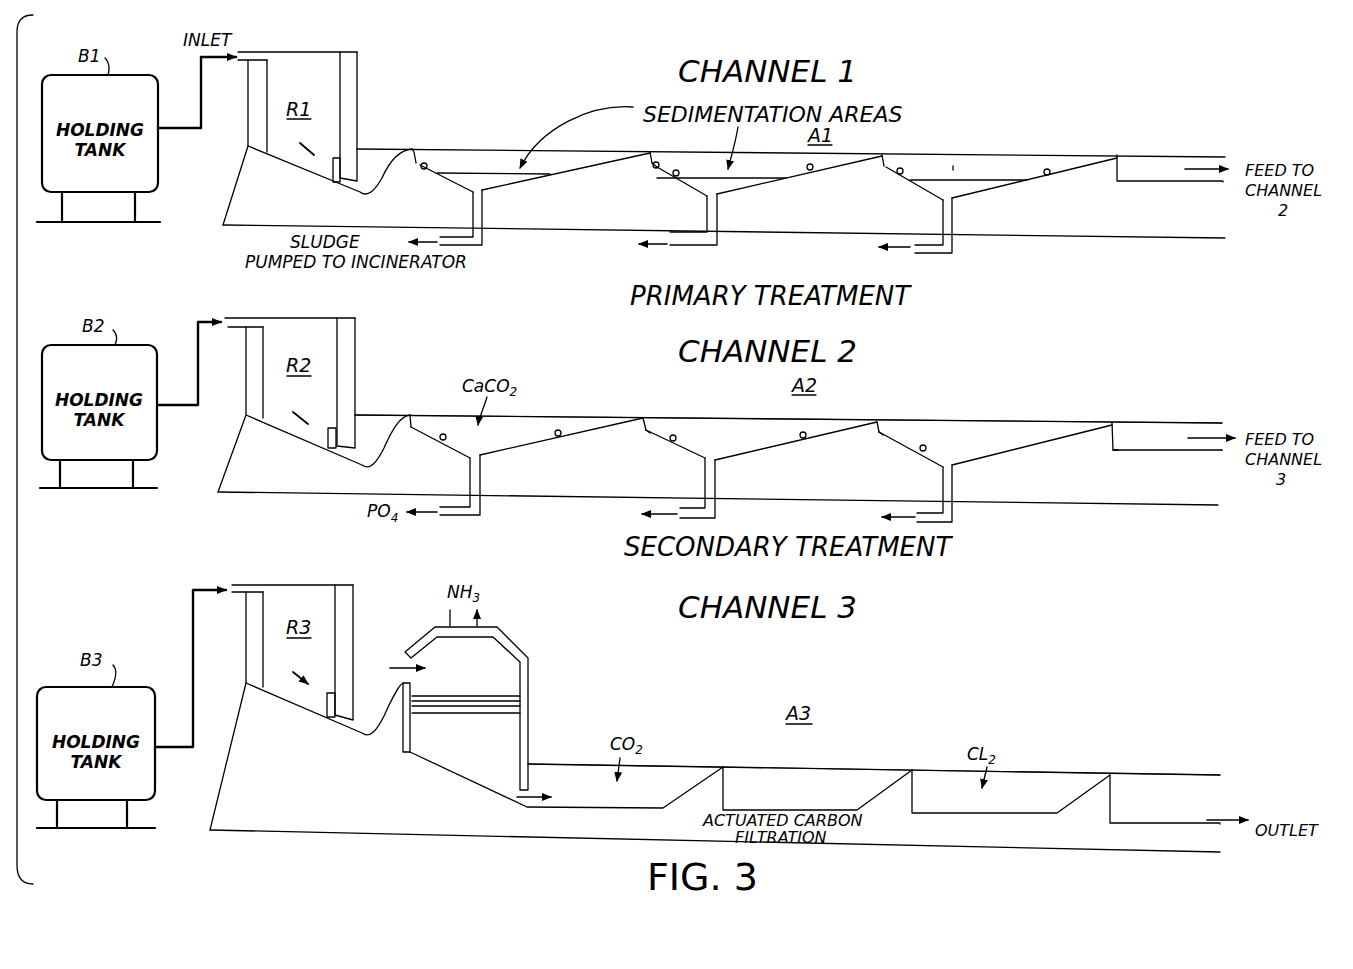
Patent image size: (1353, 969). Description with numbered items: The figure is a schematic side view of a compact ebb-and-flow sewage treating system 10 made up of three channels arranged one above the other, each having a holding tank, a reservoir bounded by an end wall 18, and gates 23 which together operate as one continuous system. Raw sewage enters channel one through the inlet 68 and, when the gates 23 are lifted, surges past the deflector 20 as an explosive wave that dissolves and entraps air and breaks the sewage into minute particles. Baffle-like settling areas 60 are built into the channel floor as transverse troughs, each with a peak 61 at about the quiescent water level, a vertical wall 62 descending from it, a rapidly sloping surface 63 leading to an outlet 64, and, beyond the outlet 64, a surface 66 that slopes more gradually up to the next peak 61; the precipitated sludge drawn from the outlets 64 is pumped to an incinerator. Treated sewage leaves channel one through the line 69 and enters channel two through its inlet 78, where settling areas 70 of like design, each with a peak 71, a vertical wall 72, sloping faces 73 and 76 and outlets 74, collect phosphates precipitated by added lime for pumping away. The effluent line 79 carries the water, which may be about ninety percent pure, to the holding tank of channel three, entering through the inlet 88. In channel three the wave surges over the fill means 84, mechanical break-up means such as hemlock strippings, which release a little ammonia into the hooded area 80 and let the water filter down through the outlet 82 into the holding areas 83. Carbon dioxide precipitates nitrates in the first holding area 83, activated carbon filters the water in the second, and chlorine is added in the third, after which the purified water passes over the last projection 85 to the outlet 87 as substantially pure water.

The waste treatment apparatus 10 is at (724, 245).
The channel end wall 18 is at (358, 77).
The deflector 20 is at (417, 149).
The gates 23 is at (328, 162).
The settling areas 60 is at (448, 150).
The peak 61 is at (651, 153).
The vertical wall 62 is at (652, 166).
The rapidly sloping surface 63 is at (423, 168).
The outlet 64 is at (482, 217).
The surface 66 is at (567, 170).
The inlet 68 is at (258, 56).
The line 69 is at (1220, 142).
The settling areas 70 is at (542, 425).
The peak 71 is at (645, 416).
The vertical wall 72 is at (650, 423).
The sloping face 73 is at (442, 439).
The outlets 74 is at (480, 478).
The sloping face 76 is at (559, 436).
The inlet of channel 2 78 is at (247, 320).
The effluent line 79 is at (1208, 435).
The hooded area 80 is at (524, 636).
The outlet 82 is at (520, 805).
The holding areas 83 is at (560, 773).
The fill means 84 is at (452, 698).
The projection 85 is at (723, 767).
The outlet 87 is at (1223, 817).
The inlet of channel 3 88 is at (247, 590).